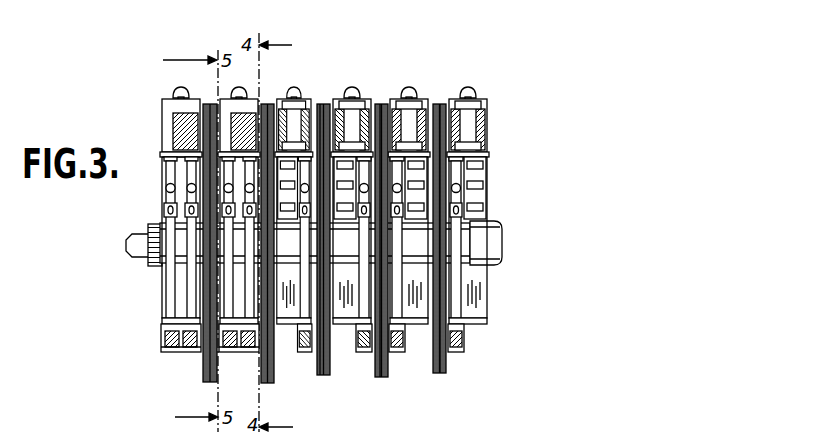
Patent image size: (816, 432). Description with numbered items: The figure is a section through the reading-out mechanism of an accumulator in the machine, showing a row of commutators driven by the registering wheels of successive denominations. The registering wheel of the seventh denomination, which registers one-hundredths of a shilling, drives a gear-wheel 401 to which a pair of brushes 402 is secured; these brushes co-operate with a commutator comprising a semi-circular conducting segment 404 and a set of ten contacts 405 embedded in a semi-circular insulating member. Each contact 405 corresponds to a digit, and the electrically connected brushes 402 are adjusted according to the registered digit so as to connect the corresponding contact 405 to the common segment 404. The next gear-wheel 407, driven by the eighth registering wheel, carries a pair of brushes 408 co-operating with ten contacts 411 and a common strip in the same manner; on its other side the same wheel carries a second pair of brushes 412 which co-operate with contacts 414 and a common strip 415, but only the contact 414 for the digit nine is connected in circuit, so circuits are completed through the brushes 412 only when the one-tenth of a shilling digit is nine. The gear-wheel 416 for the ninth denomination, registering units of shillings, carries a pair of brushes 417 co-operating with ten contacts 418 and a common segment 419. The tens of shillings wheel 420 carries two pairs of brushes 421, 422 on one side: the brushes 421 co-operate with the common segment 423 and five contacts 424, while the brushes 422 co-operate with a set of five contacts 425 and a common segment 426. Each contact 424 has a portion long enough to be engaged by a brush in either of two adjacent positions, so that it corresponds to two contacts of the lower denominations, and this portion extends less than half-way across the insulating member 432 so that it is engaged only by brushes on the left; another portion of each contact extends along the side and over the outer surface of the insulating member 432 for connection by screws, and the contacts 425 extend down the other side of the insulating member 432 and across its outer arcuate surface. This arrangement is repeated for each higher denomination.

The gear-wheel 401 is at (447, 357).
The pair of brushes 402 is at (470, 162).
The semi-circular conducting segment 404 is at (467, 334).
The set of ten contacts 405 is at (473, 100).
The gear-wheel 407 is at (388, 364).
The pair of brushes 408 is at (437, 102).
The ten contacts 411 is at (421, 98).
The second pair of brushes 412 is at (378, 102).
The contacts 414 is at (360, 99).
The common strip 415 is at (363, 349).
The gear-wheel 416 is at (328, 349).
The pair of brushes 417 is at (306, 100).
The ten contacts 418 is at (312, 99).
The common segment 419 is at (310, 353).
The tens of shillings wheel 420 is at (275, 381).
The pair of brushes 421 is at (276, 330).
The pair of brushes 422 is at (237, 170).
The common segment 423 is at (258, 352).
The five contacts 424 is at (267, 120).
The set of five contacts 425 is at (228, 110).
The common segment 426 is at (208, 350).
The insulating member 432 is at (243, 120).